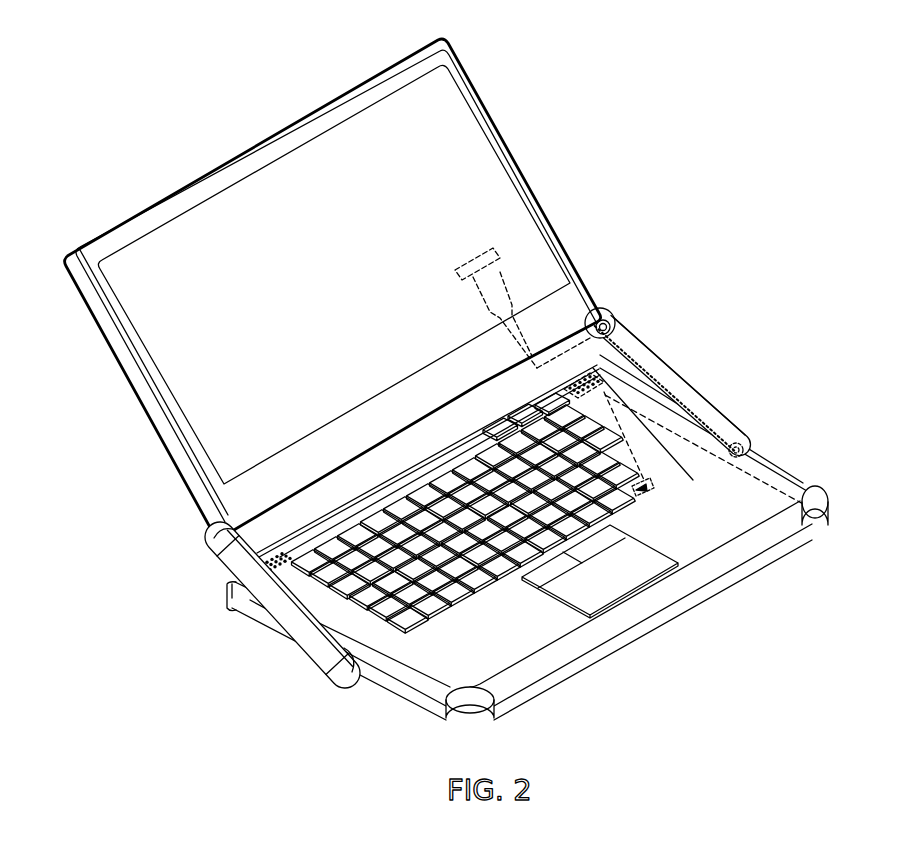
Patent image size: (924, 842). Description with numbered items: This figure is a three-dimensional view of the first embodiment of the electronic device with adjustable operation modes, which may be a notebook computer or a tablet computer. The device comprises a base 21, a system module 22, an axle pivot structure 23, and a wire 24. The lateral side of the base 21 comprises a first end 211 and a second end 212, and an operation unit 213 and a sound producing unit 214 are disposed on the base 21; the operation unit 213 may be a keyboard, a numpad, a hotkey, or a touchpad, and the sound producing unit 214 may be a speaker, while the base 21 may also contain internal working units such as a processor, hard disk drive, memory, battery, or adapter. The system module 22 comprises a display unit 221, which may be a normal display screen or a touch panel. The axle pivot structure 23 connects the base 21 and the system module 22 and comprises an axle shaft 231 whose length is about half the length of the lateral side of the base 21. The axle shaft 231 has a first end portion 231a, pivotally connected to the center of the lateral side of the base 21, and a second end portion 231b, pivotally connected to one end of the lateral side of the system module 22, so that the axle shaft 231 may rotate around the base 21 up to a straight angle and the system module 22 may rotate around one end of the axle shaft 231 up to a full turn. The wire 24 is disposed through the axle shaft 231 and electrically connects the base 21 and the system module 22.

The base 21 is at (815, 463).
The first end 211 is at (470, 721).
The second end 212 is at (228, 597).
The operation unit 213 is at (640, 488).
The sound producing unit 214 is at (592, 368).
The system module 22 is at (527, 145).
The display unit 221 is at (463, 135).
The axle pivot structure 23 is at (682, 355).
The axle shaft 231 is at (265, 605).
The first end portion 231a is at (340, 687).
The second end portion 231b is at (210, 540).
The wire 24 is at (580, 317).